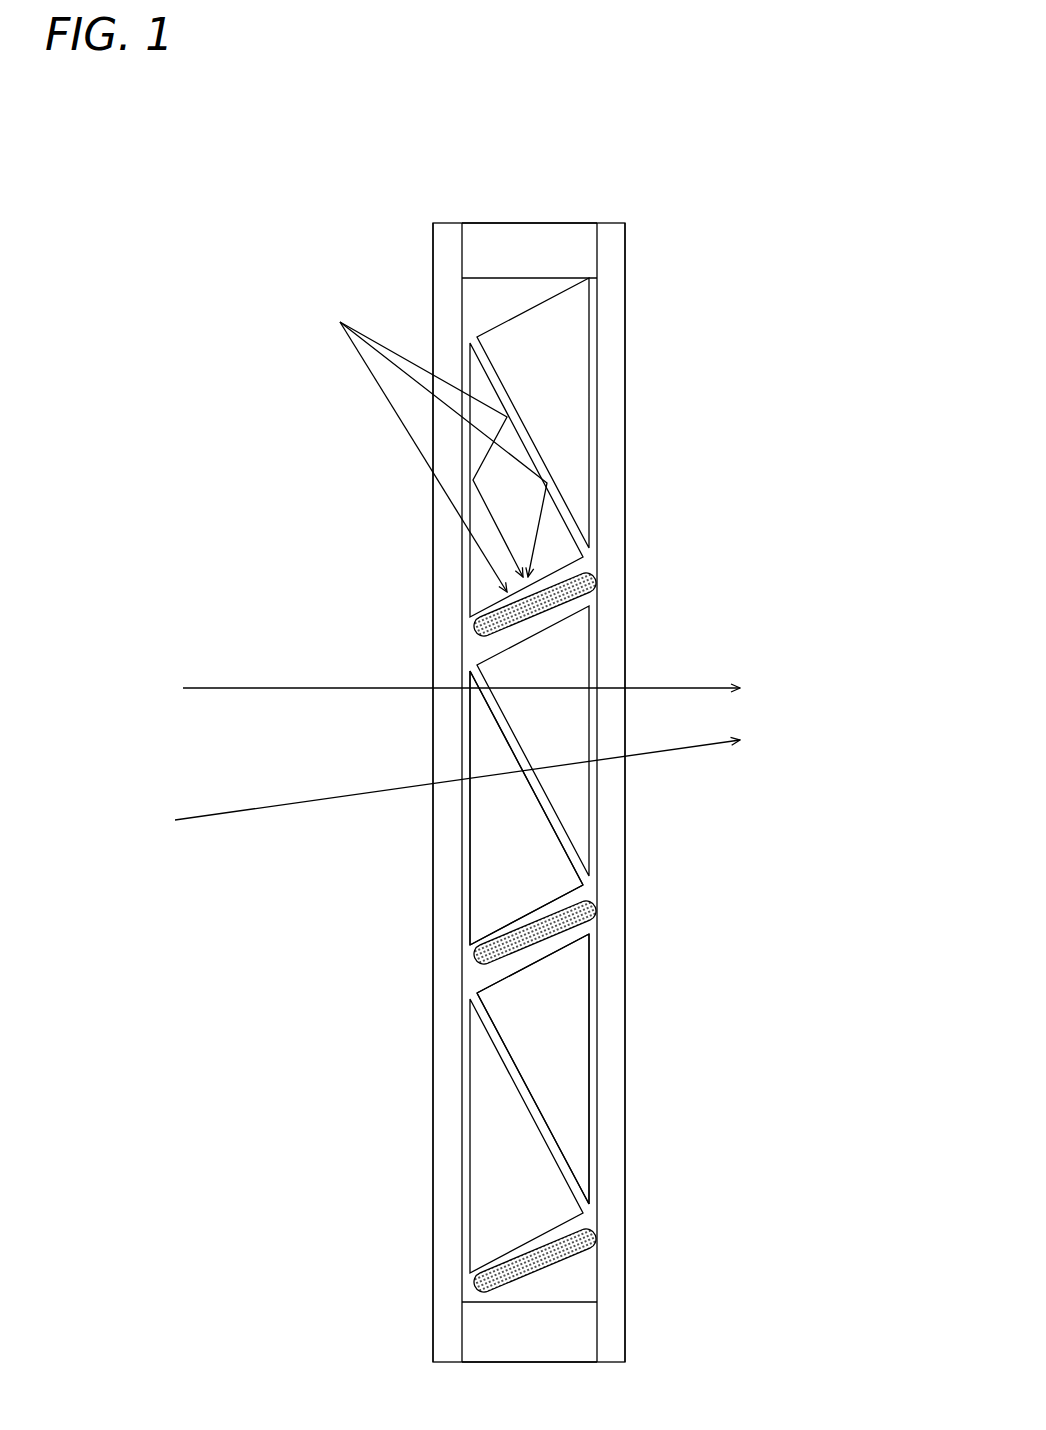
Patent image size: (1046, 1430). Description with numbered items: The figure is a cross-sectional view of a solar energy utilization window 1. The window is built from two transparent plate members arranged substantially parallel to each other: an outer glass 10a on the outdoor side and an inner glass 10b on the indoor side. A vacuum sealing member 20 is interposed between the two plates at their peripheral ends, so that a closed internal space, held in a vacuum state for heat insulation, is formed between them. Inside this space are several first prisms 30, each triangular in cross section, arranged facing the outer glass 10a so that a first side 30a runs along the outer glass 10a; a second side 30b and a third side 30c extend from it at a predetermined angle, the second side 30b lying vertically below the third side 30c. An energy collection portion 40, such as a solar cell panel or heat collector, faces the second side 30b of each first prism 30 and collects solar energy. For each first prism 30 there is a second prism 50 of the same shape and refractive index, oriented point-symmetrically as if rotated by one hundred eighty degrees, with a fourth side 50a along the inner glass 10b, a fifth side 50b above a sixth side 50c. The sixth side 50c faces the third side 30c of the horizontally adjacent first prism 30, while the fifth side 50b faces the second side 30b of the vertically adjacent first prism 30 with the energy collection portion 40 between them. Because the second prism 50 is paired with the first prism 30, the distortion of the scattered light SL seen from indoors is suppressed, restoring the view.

The solar energy utilization window 1 is at (739, 172).
The outer glass 10a is at (448, 293).
The inner glass 10b is at (612, 340).
The vacuum sealing member 20 is at (563, 243).
The first prism 30 is at (480, 596).
The first side 30a is at (483, 850).
The second side 30b is at (553, 886).
The third side 30c is at (558, 830).
The energy collection portion 40 is at (598, 578).
The second prism 50 is at (567, 398).
The fourth side 50a is at (578, 1105).
The fifth side 50b is at (513, 1002).
The sixth side 50c is at (513, 1063).
The scattered light SL is at (288, 688).